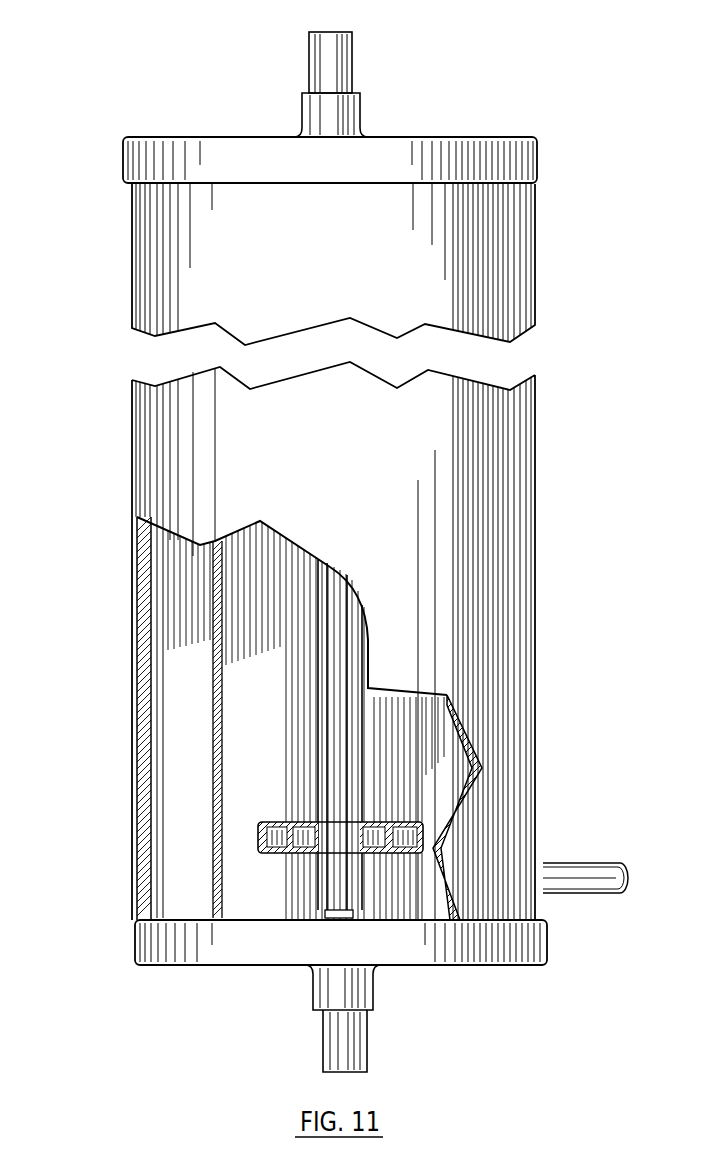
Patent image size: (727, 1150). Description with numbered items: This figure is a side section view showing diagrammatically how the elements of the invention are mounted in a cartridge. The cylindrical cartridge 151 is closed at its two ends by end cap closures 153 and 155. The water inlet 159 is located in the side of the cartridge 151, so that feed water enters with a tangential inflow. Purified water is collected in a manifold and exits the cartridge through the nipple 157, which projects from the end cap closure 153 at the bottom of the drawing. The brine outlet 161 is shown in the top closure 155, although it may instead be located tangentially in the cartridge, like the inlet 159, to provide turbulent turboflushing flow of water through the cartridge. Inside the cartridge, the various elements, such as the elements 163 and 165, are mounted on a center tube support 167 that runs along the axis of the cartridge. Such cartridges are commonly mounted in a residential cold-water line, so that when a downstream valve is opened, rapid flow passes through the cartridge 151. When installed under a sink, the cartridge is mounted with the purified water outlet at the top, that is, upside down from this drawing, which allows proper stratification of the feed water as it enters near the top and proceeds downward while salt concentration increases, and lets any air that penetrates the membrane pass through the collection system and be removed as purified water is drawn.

The cylindrical cartridge 151 is at (440, 541).
The end cap closure 153 is at (529, 948).
The end cap closure 155 is at (265, 137).
The nipple 157 is at (345, 1072).
The water inlet 159 is at (592, 873).
The brine outlet 161 is at (333, 32).
The element 163 is at (237, 822).
The element 165 is at (420, 774).
The center tube support 167 is at (340, 768).